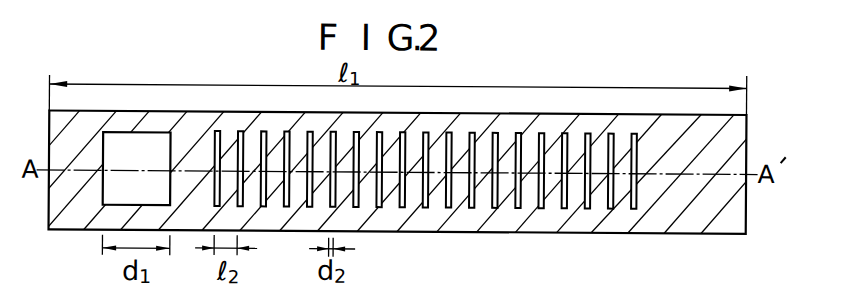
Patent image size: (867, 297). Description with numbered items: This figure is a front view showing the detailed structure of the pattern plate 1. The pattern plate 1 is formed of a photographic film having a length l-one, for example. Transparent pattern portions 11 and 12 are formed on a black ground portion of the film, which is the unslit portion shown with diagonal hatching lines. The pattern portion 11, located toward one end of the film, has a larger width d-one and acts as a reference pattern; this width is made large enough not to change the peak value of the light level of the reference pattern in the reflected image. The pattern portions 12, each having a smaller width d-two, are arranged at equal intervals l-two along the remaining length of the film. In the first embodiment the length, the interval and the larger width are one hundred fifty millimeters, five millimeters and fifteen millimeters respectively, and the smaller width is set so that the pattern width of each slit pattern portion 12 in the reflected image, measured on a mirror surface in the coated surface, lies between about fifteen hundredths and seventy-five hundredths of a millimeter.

The pattern plate 1 is at (557, 110).
The reference pattern portion 11 is at (148, 140).
The slit pattern portions 12 is at (404, 130).